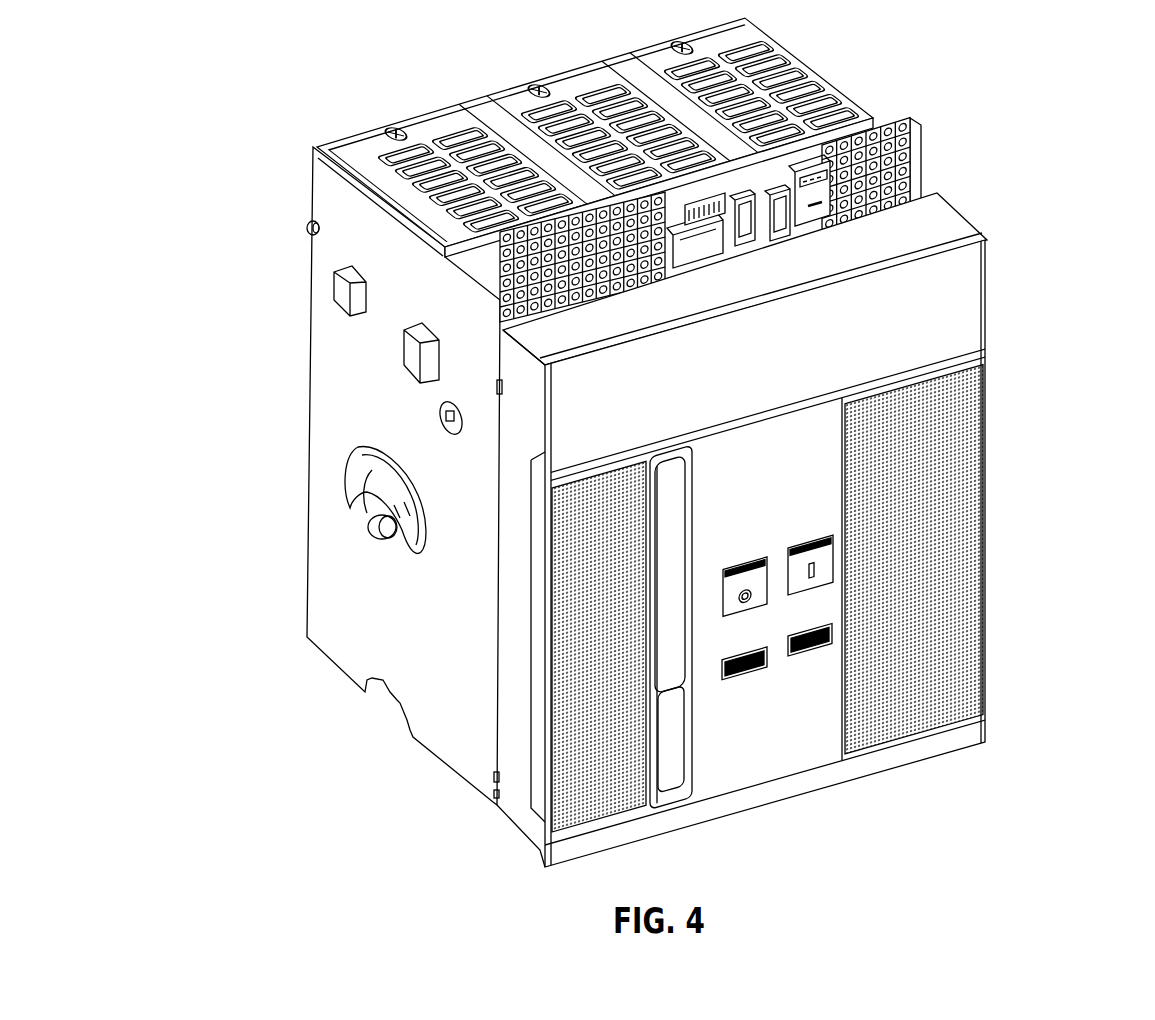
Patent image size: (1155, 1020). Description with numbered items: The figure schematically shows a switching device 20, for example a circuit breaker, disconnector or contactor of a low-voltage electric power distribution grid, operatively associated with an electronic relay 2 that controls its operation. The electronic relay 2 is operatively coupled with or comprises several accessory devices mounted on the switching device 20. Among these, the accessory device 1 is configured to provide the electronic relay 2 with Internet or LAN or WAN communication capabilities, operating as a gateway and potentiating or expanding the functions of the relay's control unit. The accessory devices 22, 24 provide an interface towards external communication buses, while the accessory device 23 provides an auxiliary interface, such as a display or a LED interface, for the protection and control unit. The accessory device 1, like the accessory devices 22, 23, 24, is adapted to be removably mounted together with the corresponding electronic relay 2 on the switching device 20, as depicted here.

The switching device 20 is at (268, 148).
The electronic relay 2 is at (948, 297).
The accessory device 22 is at (698, 252).
The accessory device 1 is at (741, 226).
The accessory device 24 is at (783, 230).
The accessory device 23 is at (820, 210).